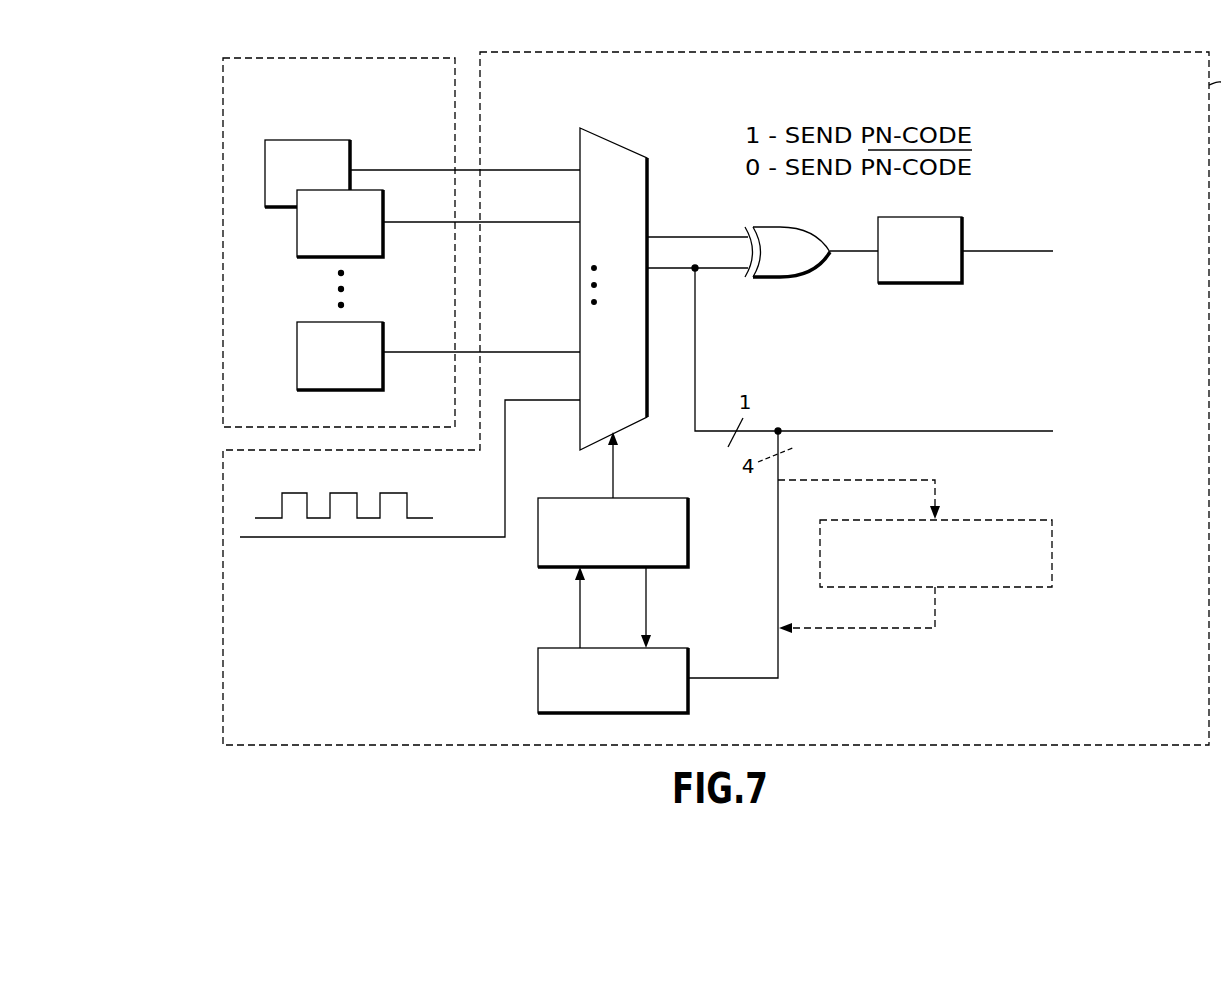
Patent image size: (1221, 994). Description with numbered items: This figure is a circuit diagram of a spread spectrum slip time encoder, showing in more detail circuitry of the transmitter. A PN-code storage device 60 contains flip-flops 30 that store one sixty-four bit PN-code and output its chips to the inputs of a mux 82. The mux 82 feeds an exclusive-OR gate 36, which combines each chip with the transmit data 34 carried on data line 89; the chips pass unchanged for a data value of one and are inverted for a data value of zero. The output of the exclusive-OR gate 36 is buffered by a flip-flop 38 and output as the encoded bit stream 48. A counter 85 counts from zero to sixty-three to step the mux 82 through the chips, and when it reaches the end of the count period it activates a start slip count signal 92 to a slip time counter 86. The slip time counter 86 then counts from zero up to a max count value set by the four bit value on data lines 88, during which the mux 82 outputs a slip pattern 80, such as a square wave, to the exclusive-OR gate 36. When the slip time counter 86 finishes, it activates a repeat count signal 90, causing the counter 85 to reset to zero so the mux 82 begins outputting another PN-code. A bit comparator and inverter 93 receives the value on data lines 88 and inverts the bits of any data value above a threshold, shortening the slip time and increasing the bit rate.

The PN-code storage device 60 is at (223, 98).
The flip-flops 30 is at (272, 236).
The slip pattern 80 is at (463, 537).
The mux 82 is at (616, 145).
The exclusive-OR gate 36 is at (782, 280).
The flip-flop 38 is at (916, 285).
The encoded bit stream 48 is at (1004, 250).
The data line 89 is at (697, 352).
The transmit data 34 is at (1004, 431).
The data lines 88 is at (780, 660).
The counter 85 is at (663, 498).
The slip time counter 86 is at (538, 682).
The repeat count signal 90 is at (579, 607).
The start slip count signal 92 is at (648, 607).
The bit comparator and inverter 93 is at (1004, 520).